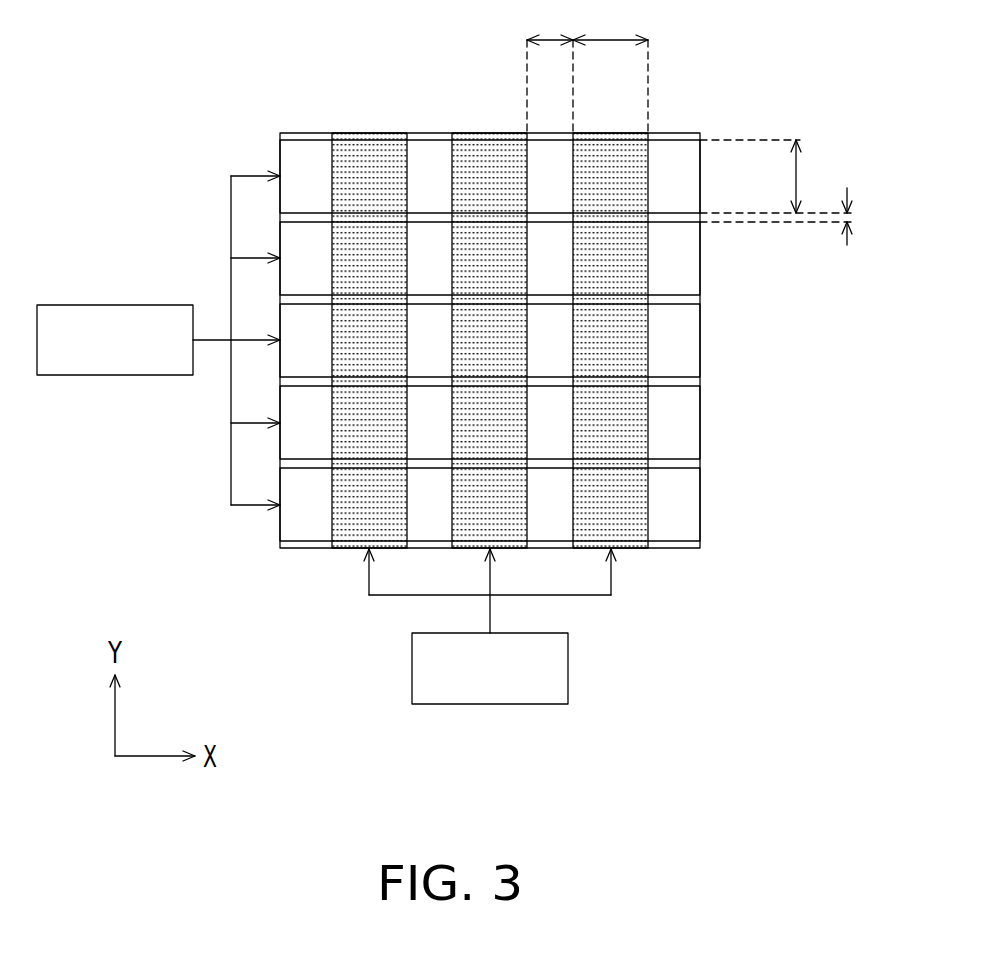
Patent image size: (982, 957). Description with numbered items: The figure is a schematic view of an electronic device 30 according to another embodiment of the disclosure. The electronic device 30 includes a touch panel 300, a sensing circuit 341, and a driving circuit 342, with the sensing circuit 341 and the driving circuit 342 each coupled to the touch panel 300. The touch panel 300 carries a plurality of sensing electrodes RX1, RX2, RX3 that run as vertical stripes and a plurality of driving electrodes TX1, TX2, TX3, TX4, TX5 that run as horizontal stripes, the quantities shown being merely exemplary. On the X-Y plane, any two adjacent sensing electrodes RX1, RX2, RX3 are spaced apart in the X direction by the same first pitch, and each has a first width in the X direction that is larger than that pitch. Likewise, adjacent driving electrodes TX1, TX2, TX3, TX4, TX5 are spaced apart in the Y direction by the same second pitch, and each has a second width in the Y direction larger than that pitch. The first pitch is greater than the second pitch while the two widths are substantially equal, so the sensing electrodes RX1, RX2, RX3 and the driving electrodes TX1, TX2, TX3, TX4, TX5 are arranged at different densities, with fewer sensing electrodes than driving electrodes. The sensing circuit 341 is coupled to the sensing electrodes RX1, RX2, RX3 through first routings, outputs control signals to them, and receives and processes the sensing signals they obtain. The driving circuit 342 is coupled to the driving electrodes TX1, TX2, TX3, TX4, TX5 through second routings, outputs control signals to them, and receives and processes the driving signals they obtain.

The electronic device 30 is at (779, 808).
The touch panel 300 is at (526, 345).
The sensing circuit 341 is at (569, 668).
The driving circuit 342 is at (112, 376).
The sensing electrode RX1 is at (370, 152).
The sensing electrode RX2 is at (492, 152).
The sensing electrode RX3 is at (613, 152).
The driving electrode TX1 is at (687, 173).
The driving electrode TX2 is at (687, 255).
The driving electrode TX3 is at (687, 338).
The driving electrode TX4 is at (687, 418).
The driving electrode TX5 is at (687, 500).